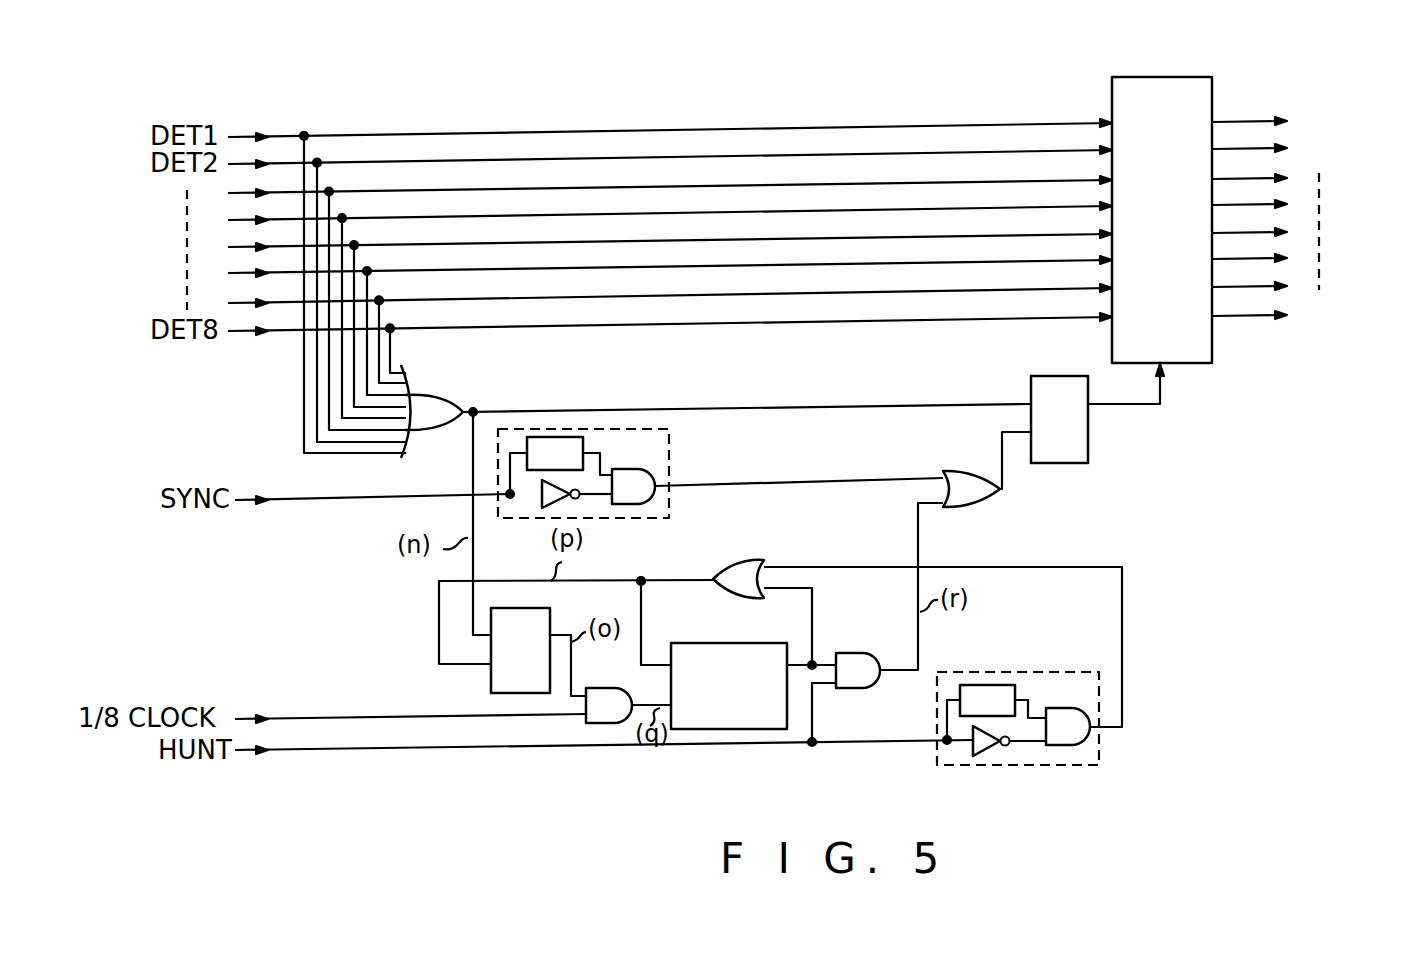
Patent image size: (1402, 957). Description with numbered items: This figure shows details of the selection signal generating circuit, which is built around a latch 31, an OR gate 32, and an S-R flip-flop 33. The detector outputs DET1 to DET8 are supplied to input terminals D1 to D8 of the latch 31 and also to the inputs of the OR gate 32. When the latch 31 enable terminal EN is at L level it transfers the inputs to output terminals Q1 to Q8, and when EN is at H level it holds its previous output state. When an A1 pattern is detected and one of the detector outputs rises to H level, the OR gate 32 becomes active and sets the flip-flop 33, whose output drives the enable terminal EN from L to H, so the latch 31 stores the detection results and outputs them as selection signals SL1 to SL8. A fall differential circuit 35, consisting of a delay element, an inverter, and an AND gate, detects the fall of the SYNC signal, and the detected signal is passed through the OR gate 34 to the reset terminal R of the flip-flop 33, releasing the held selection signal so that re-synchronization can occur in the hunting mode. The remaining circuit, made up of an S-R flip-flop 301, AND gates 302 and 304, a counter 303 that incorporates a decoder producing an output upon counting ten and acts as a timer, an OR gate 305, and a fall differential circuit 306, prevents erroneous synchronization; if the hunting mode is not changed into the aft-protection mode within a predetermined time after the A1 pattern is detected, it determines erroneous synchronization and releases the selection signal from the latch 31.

The latch 31 is at (1131, 77).
The OR gate 32 is at (436, 396).
The S-R flip-flop 33 is at (1090, 430).
The OR gate 34 is at (985, 505).
The fall differential circuit 35 is at (671, 452).
The S-R flip-flop 301 is at (552, 612).
The AND gate 302 is at (599, 688).
The counter 303 is at (684, 643).
The AND gate 304 is at (848, 653).
The OR gate 305 is at (737, 560).
The fall differential circuit 306 is at (1036, 672).